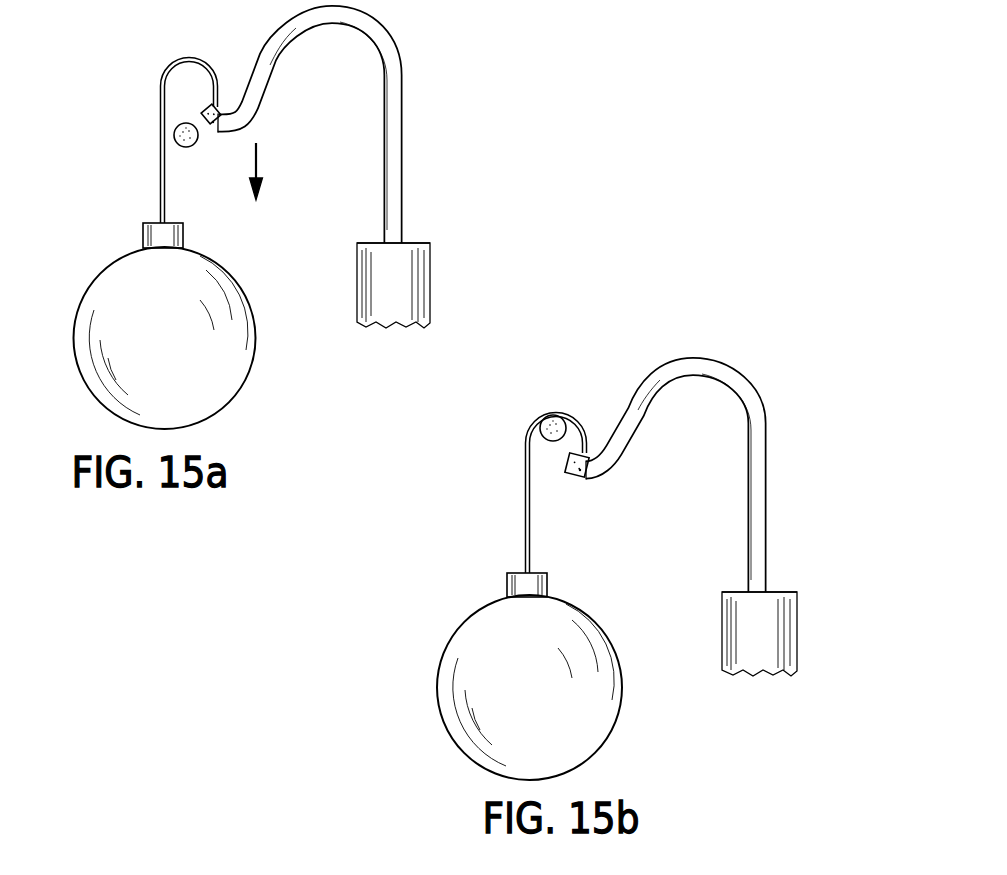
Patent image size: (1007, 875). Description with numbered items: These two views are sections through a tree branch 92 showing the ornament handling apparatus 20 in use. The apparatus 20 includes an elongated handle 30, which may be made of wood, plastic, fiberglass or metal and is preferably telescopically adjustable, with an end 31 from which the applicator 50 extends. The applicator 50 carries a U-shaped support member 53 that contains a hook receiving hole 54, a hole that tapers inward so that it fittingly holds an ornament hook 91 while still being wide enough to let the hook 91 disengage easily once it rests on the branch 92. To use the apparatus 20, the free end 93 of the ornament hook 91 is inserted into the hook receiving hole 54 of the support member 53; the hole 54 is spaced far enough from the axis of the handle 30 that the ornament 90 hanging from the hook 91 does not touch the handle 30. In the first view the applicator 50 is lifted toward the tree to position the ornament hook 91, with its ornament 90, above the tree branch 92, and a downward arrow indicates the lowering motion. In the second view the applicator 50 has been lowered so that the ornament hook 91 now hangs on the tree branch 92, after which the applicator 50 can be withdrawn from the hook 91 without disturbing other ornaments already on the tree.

In FIG. 15a, the ornament handling apparatus 20 is at (450, 150).
In FIG. 15b, the ornament handling apparatus 20 is at (778, 453).
In FIG. 15a, the elongated handle 30 is at (415, 295).
In FIG. 15b, the elongated handle 30 is at (735, 645).
In FIG. 15a, the end of elongated handle 31 is at (413, 243).
In FIG. 15b, the end of elongated handle 31 is at (740, 592).
In FIG. 15a, the applicator 50 is at (386, 42).
In FIG. 15b, the applicator 50 is at (735, 385).
In FIG. 15a, the support member 53 is at (235, 113).
In FIG. 15b, the support member 53 is at (606, 481).
In FIG. 15a, the hook receiving hole 54 is at (213, 125).
In FIG. 15b, the hook receiving hole 54 is at (577, 470).
In FIG. 15a, the ornament 90 is at (114, 283).
In FIG. 15b, the ornament 90 is at (455, 645).
In FIG. 15a, the ornament hook 91 is at (185, 57).
In FIG. 15b, the ornament hook 91 is at (527, 503).
In FIG. 15a, the tree branch 92 is at (186, 135).
In FIG. 15b, the tree branch 92 is at (553, 428).
In FIG. 15a, the free end of ornament hook 93 is at (212, 90).
In FIG. 15b, the free end of ornament hook 93 is at (582, 450).